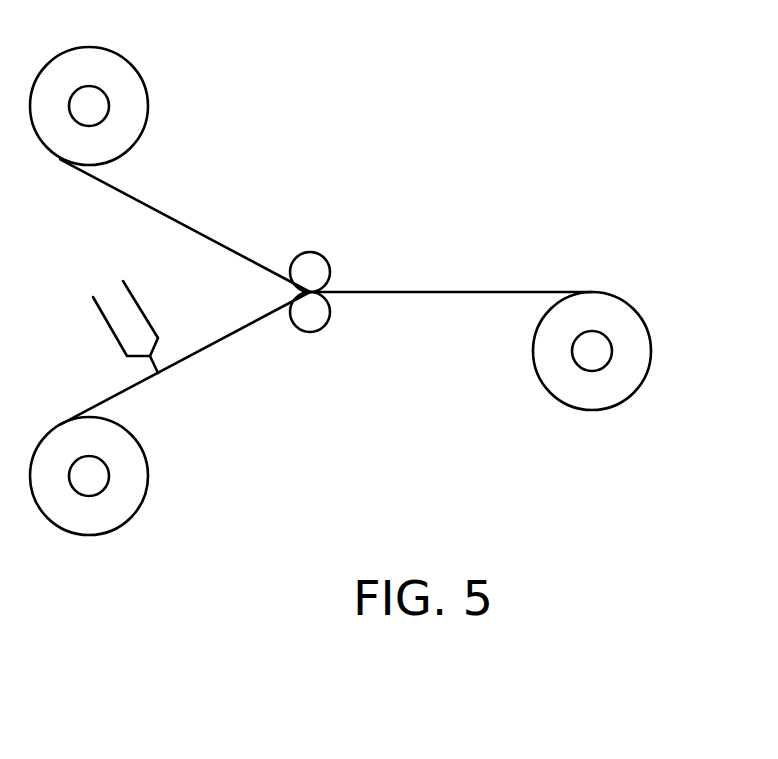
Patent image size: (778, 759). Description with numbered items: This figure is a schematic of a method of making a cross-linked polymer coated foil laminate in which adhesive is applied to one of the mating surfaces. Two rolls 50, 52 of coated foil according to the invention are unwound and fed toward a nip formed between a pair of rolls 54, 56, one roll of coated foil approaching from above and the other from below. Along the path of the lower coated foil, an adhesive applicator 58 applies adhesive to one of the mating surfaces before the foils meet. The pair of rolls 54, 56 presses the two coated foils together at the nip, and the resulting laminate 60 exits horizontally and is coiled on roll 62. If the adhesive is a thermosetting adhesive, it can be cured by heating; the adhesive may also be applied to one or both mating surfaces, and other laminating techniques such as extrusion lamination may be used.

The roll of coated foil 50 is at (113, 70).
The roll of coated foil 52 is at (113, 512).
The roll 54 is at (317, 268).
The roll 56 is at (318, 317).
The adhesive applicator 58 is at (138, 302).
The laminate 60 is at (492, 290).
The roll 62 is at (610, 318).